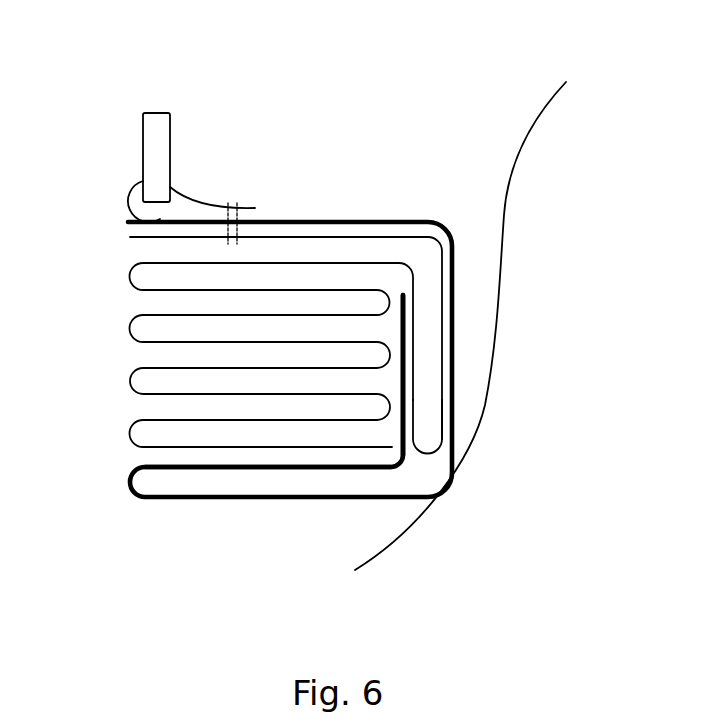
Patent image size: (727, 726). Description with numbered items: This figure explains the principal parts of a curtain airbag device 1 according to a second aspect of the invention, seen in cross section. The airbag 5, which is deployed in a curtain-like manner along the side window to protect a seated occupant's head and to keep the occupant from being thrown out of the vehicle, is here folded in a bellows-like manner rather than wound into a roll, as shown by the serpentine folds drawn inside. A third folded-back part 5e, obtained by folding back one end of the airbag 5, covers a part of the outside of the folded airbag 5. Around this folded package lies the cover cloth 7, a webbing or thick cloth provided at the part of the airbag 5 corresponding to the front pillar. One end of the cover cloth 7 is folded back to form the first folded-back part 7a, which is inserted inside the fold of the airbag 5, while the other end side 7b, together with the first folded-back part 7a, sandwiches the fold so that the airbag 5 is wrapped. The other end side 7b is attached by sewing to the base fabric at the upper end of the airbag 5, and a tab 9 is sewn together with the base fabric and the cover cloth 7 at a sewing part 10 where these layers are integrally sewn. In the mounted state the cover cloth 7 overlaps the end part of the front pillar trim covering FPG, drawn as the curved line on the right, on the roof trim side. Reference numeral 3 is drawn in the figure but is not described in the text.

The curtain airbag device 1 is at (337, 146).
The terminal block 3 is at (157, 140).
The airbag 5 is at (305, 345).
The third folded-back part 5e is at (443, 364).
The cover cloth 7 is at (352, 408).
The first folded-back part 7a is at (208, 471).
The other end side 7b is at (403, 297).
The tab 9 is at (188, 194).
The sewing part 10 is at (239, 208).
The front pillar trim covering FPG is at (488, 407).